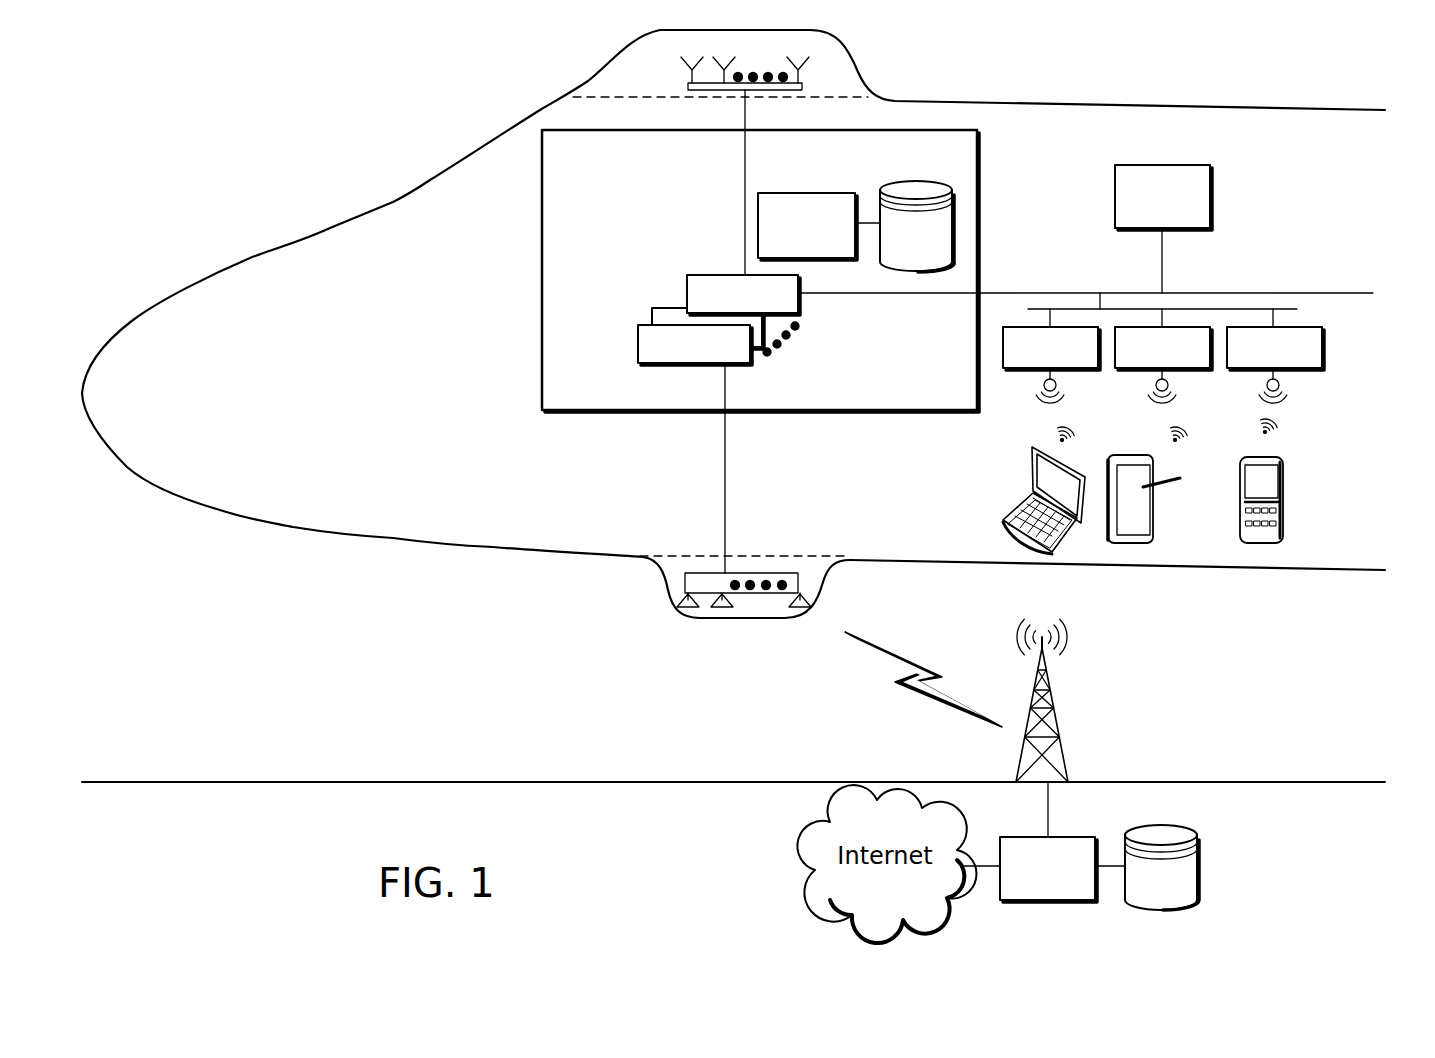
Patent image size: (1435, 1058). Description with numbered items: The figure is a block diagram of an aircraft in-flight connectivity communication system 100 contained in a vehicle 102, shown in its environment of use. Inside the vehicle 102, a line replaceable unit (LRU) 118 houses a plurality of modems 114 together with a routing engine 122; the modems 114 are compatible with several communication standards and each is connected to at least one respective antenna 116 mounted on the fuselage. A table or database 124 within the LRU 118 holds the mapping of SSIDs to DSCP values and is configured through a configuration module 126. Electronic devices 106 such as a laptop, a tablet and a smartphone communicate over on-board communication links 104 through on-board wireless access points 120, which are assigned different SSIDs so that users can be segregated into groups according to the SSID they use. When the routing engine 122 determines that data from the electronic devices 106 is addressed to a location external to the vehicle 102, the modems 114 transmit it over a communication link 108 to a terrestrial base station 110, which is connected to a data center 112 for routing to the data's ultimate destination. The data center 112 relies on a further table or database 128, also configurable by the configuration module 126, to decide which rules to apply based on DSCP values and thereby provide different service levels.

The aircraft in-flight connectivity communication system 100 is at (213, 110).
The vehicle 102 is at (222, 511).
The on-board communication links 104 is at (1022, 404).
The electronic devices 106 is at (1032, 474).
The communication link 108 is at (935, 670).
The terrestrial base station 110 is at (1057, 718).
The data center 112 is at (1022, 836).
The modems 114 is at (687, 291).
The antenna 116 is at (845, 74).
The line replaceable unit (LRU) 118 is at (542, 273).
The on-board wireless access points 120 is at (1322, 349).
The routing engine 122 is at (805, 193).
The table, database 124 is at (915, 182).
The configuration module 126 is at (1115, 197).
The table, database 128 is at (1197, 866).